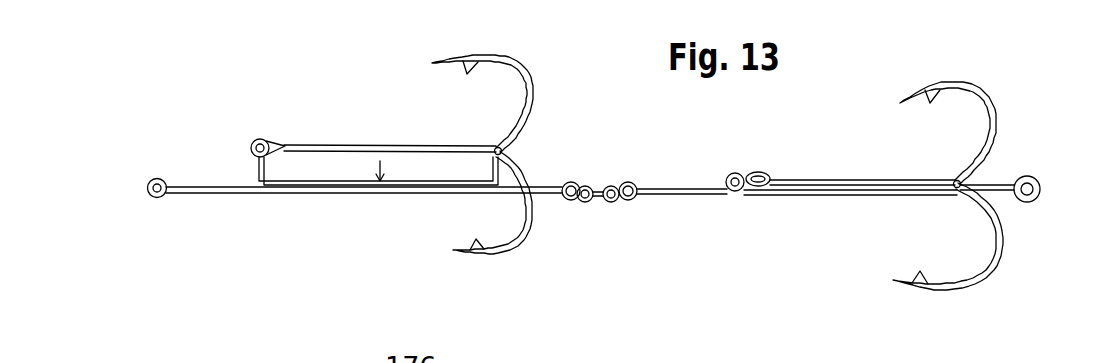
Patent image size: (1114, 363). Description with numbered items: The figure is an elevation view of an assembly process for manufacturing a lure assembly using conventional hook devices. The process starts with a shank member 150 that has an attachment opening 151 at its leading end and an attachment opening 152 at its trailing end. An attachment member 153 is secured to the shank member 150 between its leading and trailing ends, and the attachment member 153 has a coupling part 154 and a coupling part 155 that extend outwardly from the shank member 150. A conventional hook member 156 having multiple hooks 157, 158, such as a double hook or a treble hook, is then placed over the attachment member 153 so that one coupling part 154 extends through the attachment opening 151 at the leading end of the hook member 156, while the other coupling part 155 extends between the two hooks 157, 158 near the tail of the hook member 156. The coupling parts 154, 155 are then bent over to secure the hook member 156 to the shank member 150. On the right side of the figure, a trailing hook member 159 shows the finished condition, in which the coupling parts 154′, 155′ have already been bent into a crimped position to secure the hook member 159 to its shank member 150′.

The shank member 150 is at (240, 196).
The attachment opening 151 is at (152, 180).
The attachment opening 152 is at (565, 178).
The attachment member 153 is at (324, 183).
The coupling part 154 is at (253, 170).
The coupling part 155 is at (535, 134).
The hook member 156 is at (352, 146).
The hook 157 is at (518, 62).
The hook 158 is at (522, 237).
The trailing hook member 159 is at (847, 180).
The shank member 150′ is at (997, 184).
The coupling part 154′ is at (741, 172).
The coupling part 155′ is at (953, 168).